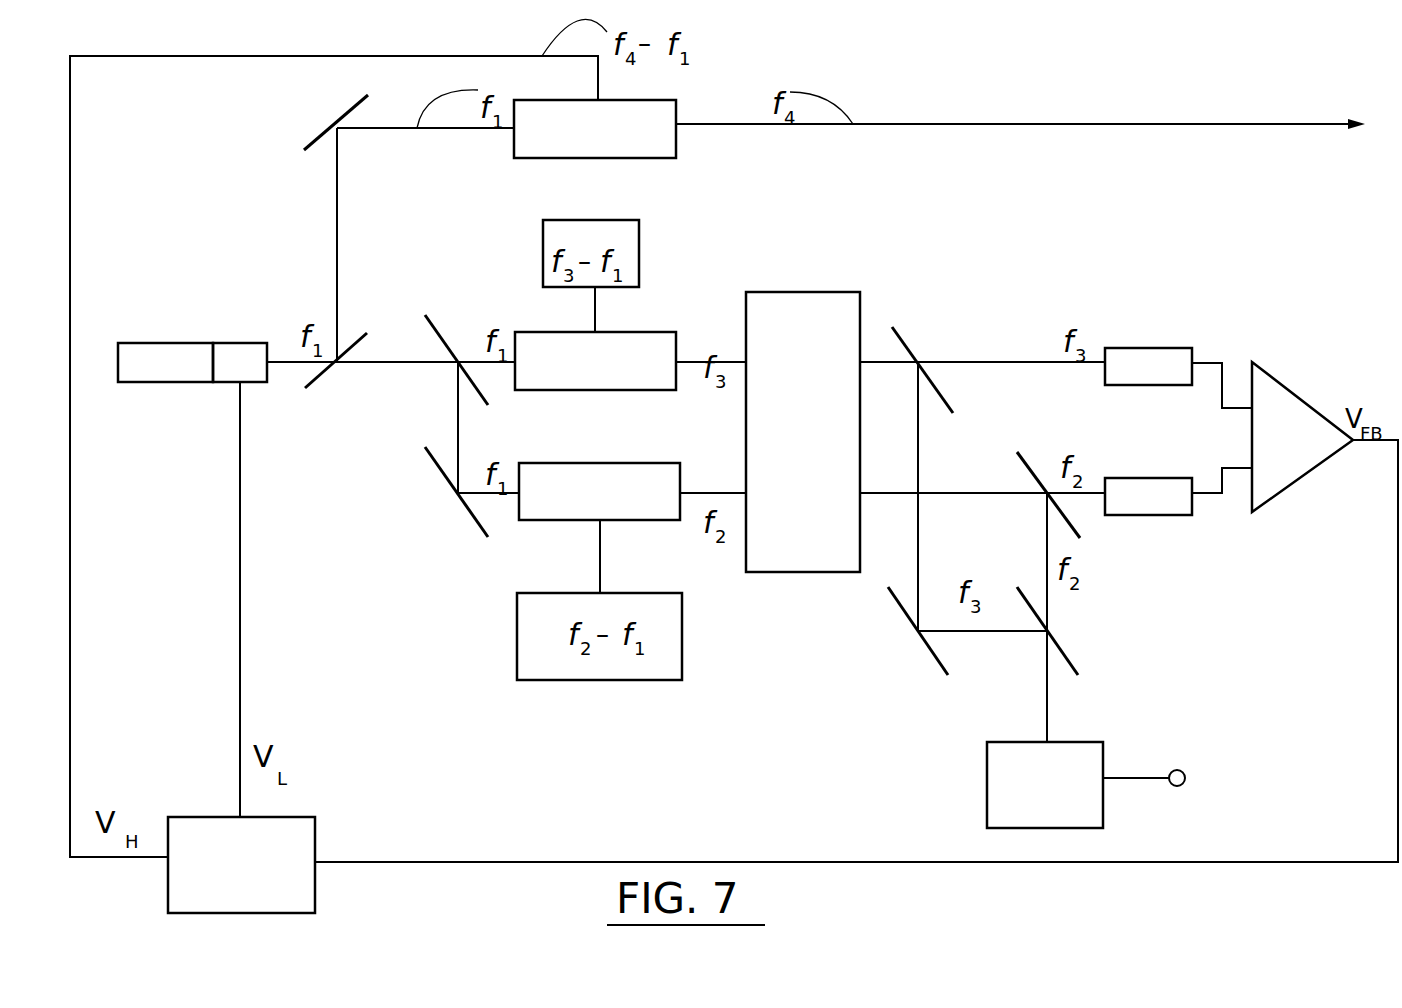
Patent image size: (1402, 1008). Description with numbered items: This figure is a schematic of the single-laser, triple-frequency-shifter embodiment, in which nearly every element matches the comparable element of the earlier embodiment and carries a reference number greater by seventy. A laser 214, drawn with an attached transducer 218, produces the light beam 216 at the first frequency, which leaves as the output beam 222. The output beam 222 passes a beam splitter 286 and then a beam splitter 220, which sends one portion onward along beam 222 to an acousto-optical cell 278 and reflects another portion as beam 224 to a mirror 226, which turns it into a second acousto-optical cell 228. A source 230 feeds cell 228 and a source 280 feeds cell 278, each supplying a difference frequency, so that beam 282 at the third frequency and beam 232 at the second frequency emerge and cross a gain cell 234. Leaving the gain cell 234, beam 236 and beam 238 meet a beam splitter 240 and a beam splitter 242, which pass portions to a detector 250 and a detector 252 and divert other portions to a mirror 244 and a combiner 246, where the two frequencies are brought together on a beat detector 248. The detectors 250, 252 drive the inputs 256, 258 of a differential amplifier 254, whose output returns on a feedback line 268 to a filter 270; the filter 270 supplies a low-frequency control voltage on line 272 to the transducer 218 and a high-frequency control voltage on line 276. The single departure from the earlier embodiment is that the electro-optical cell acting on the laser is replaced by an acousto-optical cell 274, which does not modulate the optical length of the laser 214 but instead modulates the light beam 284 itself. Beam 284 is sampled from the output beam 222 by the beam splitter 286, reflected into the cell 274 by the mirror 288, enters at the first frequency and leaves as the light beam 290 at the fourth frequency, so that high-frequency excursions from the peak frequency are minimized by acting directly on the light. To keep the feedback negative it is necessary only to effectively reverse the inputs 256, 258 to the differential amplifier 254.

The laser 214 is at (163, 345).
The light beam 216 is at (392, 363).
The piezoelectric transducer (PZT) 218 is at (217, 345).
The beam splitter 220 is at (447, 342).
The output beam 222 is at (488, 362).
The reflected beam f1 224 is at (458, 417).
The mirror 226 is at (435, 462).
The acousto-optic modulator 228 is at (626, 511).
The frequency source f2-f1 230 is at (621, 602).
The beam f2 232 is at (723, 492).
The gain cell 234 is at (830, 545).
The beam f3 output 236 is at (892, 362).
The beam f2 output 238 is at (883, 493).
The beam splitter 240 is at (905, 343).
The beam splitter 242 is at (1030, 462).
The mirror 244 is at (908, 620).
The beam combiner 246 is at (1073, 660).
The beat detector 248 is at (1097, 753).
The detector 3 250 is at (1152, 348).
The detector 2 252 is at (1137, 513).
The differential amplifier 254 is at (1307, 398).
The amplifier input from detector 3 256 is at (1222, 408).
The amplifier input from detector 2 258 is at (1223, 495).
The feedback line 268 is at (1135, 863).
The filter 270 is at (293, 898).
The low frequency control line VL 272 is at (240, 595).
The acousto-optical cell 274 is at (658, 117).
The high frequency control line VH 276 is at (70, 570).
The acousto-optic modulator 278 is at (640, 360).
The frequency source f3-f1 280 is at (623, 227).
The beam f3 282 is at (728, 360).
The light beam 284 is at (336, 197).
The beam splitter 286 is at (387, 336).
The mirror 288 is at (352, 108).
The light beam 290 is at (988, 124).